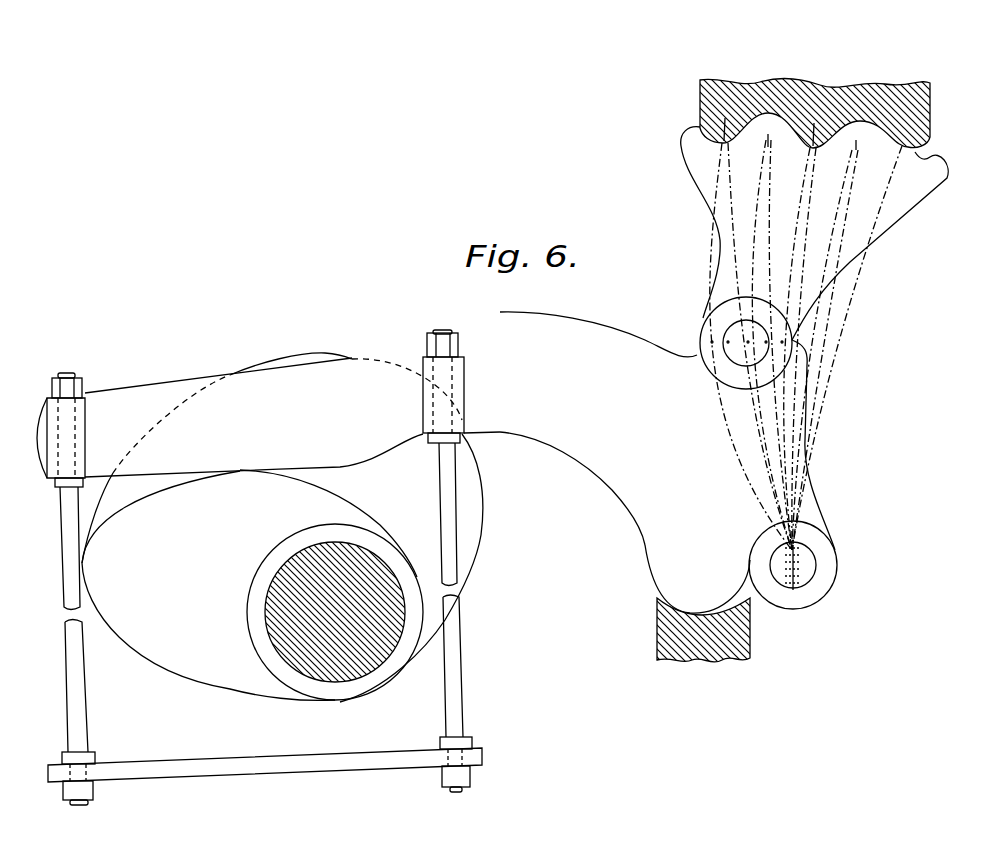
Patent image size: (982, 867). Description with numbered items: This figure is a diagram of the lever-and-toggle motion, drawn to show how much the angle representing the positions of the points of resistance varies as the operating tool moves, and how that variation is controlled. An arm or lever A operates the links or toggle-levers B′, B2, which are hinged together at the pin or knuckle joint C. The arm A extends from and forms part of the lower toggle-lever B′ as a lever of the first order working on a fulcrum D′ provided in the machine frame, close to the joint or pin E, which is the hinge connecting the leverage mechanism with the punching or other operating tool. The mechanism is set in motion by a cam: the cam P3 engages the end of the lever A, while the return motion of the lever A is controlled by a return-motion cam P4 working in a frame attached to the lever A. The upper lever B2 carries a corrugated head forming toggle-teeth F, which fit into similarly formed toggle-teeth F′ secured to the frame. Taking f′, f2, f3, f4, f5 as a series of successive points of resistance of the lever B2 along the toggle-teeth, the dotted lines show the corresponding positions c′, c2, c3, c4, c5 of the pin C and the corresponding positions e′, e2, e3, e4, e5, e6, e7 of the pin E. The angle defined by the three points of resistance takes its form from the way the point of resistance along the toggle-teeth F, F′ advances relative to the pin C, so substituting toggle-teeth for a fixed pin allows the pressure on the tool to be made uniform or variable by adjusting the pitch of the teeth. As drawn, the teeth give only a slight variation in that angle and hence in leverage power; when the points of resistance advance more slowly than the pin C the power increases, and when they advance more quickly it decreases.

The arm or lever A is at (292, 417).
The lower toggle-lever B′ is at (667, 431).
The upper toggle-lever B2 is at (814, 233).
The pin or knuckle joint C is at (738, 352).
The position of pin C c′ is at (708, 342).
The position of pin C c2 is at (726, 342).
The position of pin C c3 is at (746, 342).
The position of pin C c4 is at (764, 342).
The position of pin C c5 is at (781, 342).
The fulcrum D′ is at (697, 603).
The joint or pin E is at (784, 559).
The position of pin E e′ is at (803, 548).
The position of pin E e2 is at (805, 553).
The position of pin E e3 is at (808, 560).
The position of pin E e4 is at (810, 566).
The position of pin E e5 is at (810, 572).
The position of pin E e6 is at (805, 580).
The position of pin E e7 is at (800, 585).
The toggle-teeth F is at (815, 126).
The toggle-teeth F′ is at (769, 123).
The point of resistance f′ is at (746, 346).
The point of resistance f2 is at (772, 334).
The point of resistance f3 is at (802, 349).
The point of resistance f4 is at (828, 338).
The point of resistance f5 is at (848, 348).
The cam P3 is at (252, 585).
The return-motion cam P4 is at (282, 527).